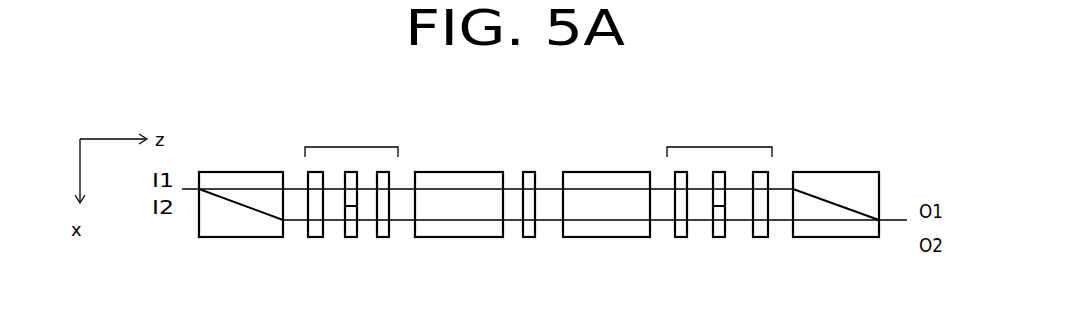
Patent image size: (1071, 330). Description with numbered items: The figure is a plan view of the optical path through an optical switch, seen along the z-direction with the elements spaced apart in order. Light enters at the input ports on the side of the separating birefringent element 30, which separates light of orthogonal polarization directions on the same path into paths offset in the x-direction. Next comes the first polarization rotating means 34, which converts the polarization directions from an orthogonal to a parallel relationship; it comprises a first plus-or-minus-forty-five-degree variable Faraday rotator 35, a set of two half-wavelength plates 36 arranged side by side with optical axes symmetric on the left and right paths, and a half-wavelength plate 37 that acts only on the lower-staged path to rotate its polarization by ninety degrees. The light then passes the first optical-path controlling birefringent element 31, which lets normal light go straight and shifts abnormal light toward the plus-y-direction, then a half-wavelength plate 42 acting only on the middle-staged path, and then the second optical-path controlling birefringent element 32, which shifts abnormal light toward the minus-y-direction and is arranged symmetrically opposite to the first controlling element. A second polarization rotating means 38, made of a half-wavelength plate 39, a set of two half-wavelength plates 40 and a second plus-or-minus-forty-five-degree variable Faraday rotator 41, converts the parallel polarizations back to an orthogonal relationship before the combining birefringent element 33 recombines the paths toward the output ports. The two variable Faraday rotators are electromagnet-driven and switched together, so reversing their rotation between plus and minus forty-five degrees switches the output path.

The separating birefringent element 30 is at (241, 177).
The first optical-path controlling birefringent element 31 is at (457, 180).
The second optical-path controlling birefringent element 32 is at (600, 177).
The combining birefringent element 33 is at (837, 178).
The first polarization rotating means 34 is at (351, 134).
The first ±45-degree variable Faraday rotator 35 is at (318, 237).
The set of two ½-wavelength plates 36 is at (352, 237).
The ½-wavelength plate 37 is at (382, 237).
The second polarization rotating means 38 is at (719, 134).
The ½-wavelength plate 39 is at (680, 237).
The set of two ½-wavelength plates 40 is at (718, 237).
The second ±45-degree variable Faraday rotator 41 is at (760, 237).
The ½-wavelength plate 42 is at (530, 172).